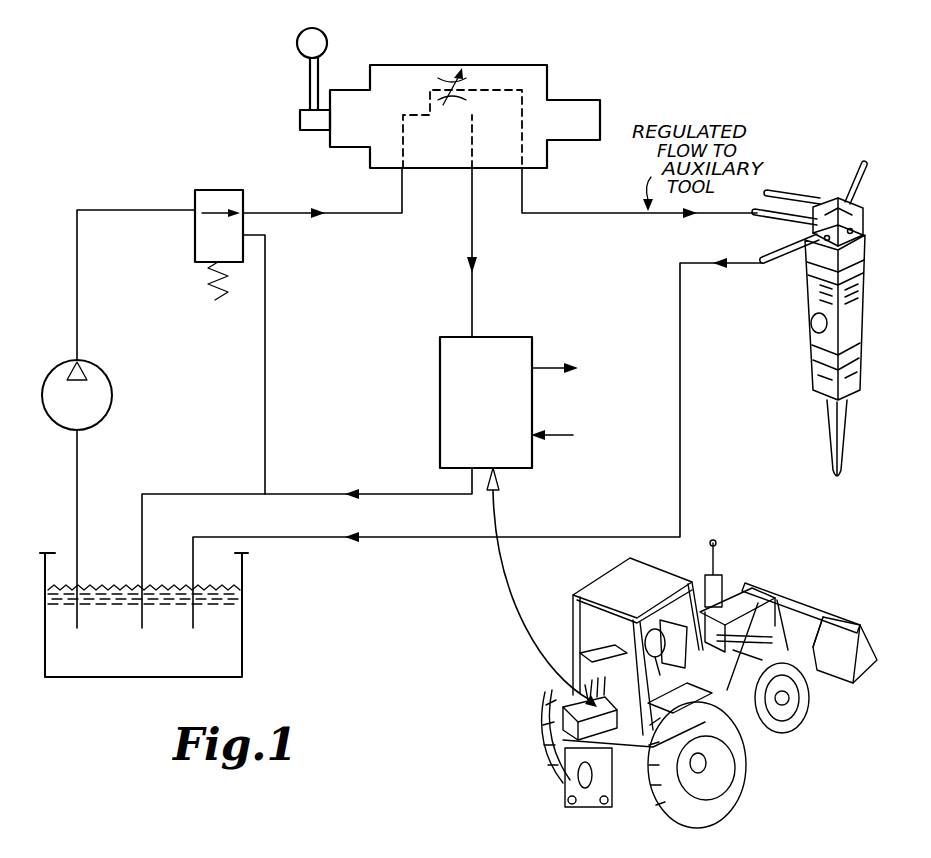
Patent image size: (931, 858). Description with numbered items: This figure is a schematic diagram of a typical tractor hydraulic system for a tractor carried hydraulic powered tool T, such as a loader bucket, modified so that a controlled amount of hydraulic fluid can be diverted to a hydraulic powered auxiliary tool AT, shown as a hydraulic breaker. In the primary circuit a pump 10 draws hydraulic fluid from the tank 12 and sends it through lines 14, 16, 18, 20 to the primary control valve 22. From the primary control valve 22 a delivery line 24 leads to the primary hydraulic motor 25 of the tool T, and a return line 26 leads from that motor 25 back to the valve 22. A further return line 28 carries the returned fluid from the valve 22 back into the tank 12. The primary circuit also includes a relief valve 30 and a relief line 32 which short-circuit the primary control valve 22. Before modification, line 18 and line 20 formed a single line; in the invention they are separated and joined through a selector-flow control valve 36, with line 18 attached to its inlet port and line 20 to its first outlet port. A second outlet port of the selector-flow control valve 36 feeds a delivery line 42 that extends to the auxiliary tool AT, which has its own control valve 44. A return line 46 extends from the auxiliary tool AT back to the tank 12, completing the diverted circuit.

The pump 10 is at (116, 397).
The tank 12 is at (144, 627).
The line 14 is at (77, 478).
The line 16 is at (77, 280).
The line 18 is at (352, 216).
The line 20 is at (469, 240).
The primary control valve 22 is at (430, 393).
The delivery line 24 is at (553, 365).
The return line 26 is at (590, 423).
The return line 28 is at (393, 497).
The relief valve 30 is at (210, 185).
The relief line 32 is at (263, 327).
The selector-flow control valve 36 is at (558, 92).
The delivery line 42 is at (566, 215).
The control valve 44 is at (835, 202).
The return line 46 is at (680, 483).
The primary hydraulic motor 25 is at (742, 723).
The auxiliary tool AT is at (810, 333).
The tool T is at (807, 617).